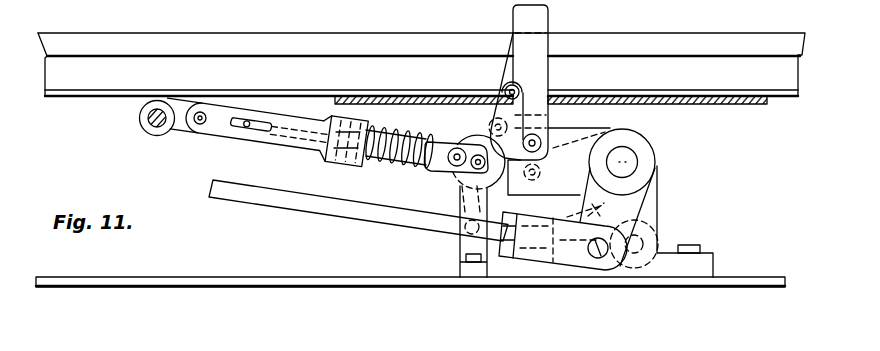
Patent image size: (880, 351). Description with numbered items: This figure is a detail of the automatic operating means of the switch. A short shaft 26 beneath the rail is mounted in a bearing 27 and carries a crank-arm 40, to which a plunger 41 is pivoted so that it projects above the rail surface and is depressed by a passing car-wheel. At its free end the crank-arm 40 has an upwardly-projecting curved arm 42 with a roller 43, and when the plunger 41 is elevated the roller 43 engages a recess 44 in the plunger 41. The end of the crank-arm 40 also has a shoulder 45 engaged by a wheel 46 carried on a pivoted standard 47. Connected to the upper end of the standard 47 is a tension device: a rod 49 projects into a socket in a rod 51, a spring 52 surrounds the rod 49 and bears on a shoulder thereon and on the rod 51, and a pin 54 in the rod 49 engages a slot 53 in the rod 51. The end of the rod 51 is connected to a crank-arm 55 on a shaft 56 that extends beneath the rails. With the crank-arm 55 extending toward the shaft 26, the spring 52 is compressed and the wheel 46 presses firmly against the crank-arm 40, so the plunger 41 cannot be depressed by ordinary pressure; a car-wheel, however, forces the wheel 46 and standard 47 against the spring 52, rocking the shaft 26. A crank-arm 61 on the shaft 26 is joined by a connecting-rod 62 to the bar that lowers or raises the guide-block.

The short shaft 26 is at (630, 160).
The bearing 27 is at (668, 265).
The crank-arm 40 is at (610, 202).
The plunger 41 is at (526, 18).
The curved arm 42 is at (495, 111).
The roller 43 is at (505, 88).
The recess 44 is at (525, 90).
The shoulder 45 is at (541, 137).
The wheel 46 is at (461, 140).
The pivoted standard 47 is at (478, 200).
The rod 49 is at (404, 166).
The rod 51 is at (294, 146).
The spring 52 is at (384, 161).
The slot 53 is at (235, 128).
The pin 54 is at (246, 129).
The crank-arm 55 is at (183, 130).
The shaft 56 is at (150, 122).
The crank-arm 61 is at (611, 217).
The connecting-rod 62 is at (300, 207).